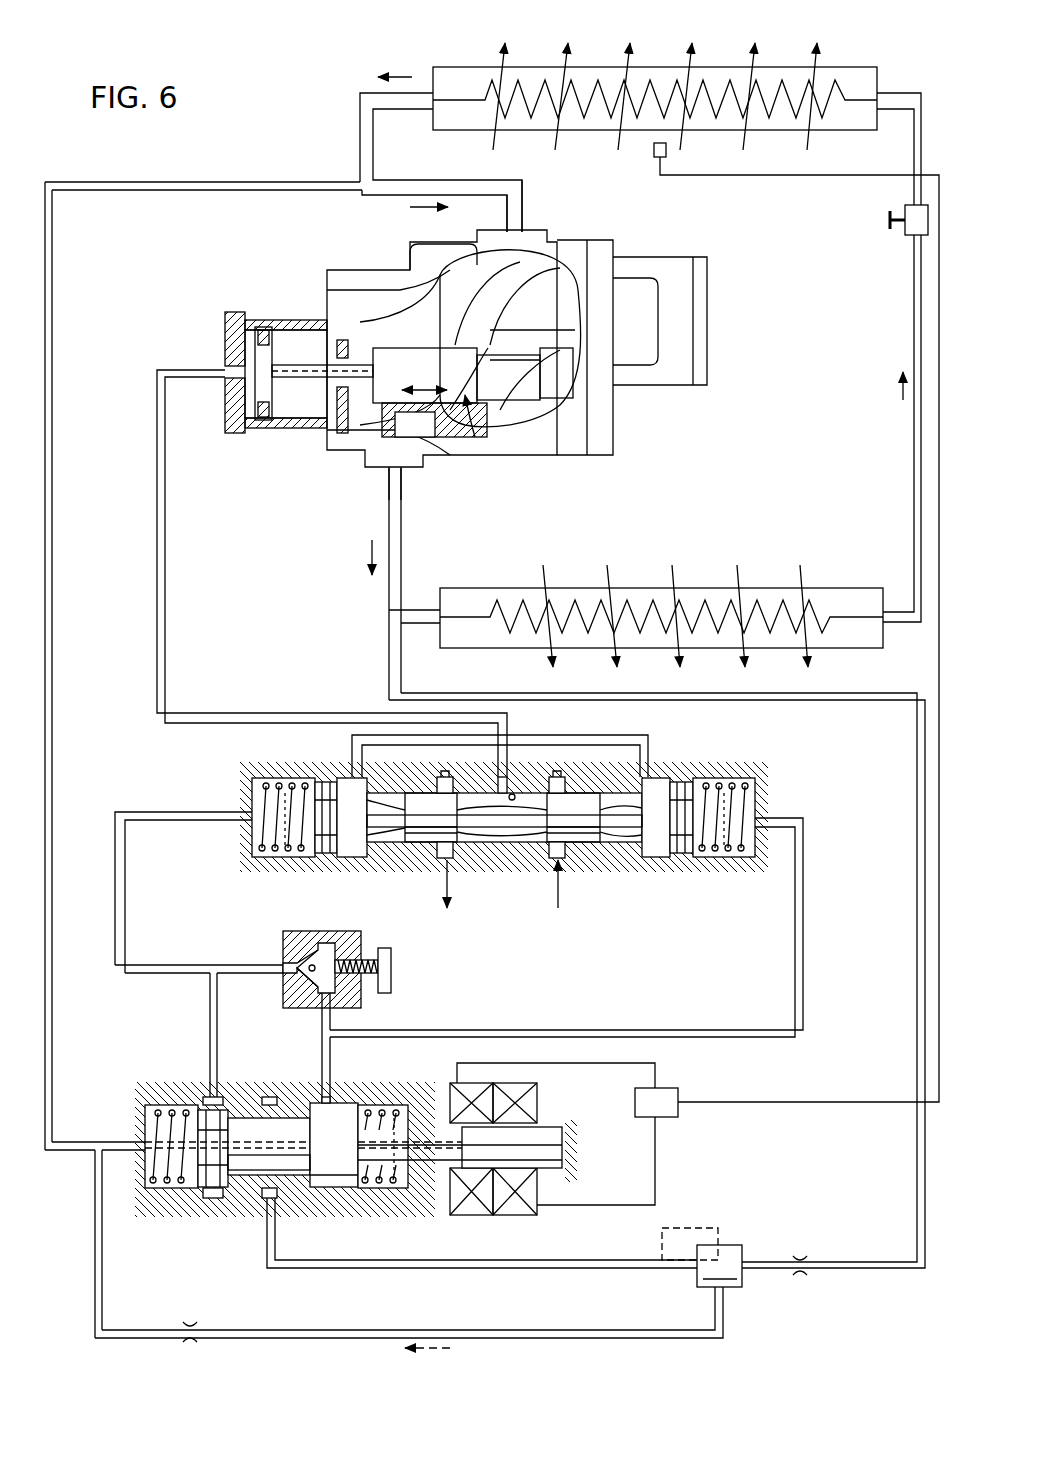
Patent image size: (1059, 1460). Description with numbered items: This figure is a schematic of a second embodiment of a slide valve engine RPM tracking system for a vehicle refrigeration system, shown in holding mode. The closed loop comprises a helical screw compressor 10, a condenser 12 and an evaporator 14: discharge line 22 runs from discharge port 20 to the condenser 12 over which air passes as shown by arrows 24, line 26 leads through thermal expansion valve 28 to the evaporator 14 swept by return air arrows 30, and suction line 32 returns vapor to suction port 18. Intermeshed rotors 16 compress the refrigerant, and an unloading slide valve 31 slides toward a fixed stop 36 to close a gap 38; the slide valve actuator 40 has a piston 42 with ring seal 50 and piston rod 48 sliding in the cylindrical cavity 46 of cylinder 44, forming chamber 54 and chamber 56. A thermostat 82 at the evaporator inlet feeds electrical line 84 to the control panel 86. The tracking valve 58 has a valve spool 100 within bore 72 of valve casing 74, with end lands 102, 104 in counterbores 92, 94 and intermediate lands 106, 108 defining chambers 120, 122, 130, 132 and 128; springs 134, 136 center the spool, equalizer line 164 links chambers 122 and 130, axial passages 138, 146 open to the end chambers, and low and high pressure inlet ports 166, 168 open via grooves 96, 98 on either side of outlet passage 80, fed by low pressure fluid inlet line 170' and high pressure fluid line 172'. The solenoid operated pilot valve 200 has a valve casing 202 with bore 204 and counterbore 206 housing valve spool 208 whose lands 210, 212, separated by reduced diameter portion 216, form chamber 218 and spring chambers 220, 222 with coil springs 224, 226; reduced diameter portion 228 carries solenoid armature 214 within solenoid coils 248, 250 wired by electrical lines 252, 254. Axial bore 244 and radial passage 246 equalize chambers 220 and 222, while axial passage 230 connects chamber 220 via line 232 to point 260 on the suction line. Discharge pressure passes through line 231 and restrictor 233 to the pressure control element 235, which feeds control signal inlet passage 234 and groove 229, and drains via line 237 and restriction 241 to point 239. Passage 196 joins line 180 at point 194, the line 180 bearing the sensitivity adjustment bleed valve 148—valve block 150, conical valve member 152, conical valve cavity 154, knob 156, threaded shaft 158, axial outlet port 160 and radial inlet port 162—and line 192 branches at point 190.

The helical screw rotary compressor 10 is at (660, 243).
The condenser 12 is at (818, 578).
The evaporator 14 is at (840, 55).
The helical screw rotors 16 is at (557, 326).
The suction port 18 is at (522, 240).
The discharge port 20 is at (402, 475).
The discharge line 22 is at (402, 545).
The arrows 24 is at (652, 568).
The line 26 is at (910, 570).
The thermal expansion valve 28 is at (915, 210).
The arrows 30 is at (630, 52).
The unloading slide valve 31 is at (480, 445).
The suction line 32 is at (375, 160).
The fixed stop 36 is at (580, 380).
The gap 38 is at (530, 365).
The slide valve actuator 40 is at (285, 364).
The piston 42 is at (232, 345).
The cylinder 44 is at (295, 428).
The cylindrical cavity 46 is at (320, 425).
The piston rod 48 is at (312, 365).
The ring seal 50 is at (263, 327).
The chamber 54 is at (258, 420).
The chamber 56 is at (340, 340).
The tracking valve 58 is at (466, 885).
The cylindrical bore 72 is at (481, 820).
The valve casing 74 is at (735, 773).
The outlet passage 80 is at (162, 605).
The thermostat 82 is at (654, 155).
The electrical line 84 is at (795, 175).
The control panel 86 is at (672, 1088).
The counterbore 92 is at (305, 780).
The counterbore 94 is at (710, 773).
The annular groove 96 is at (446, 777).
The annular groove 98 is at (565, 767).
The valve spool 100 is at (500, 790).
The end land 102 is at (335, 778).
The end land 104 is at (640, 778).
The intermediate land 106 is at (420, 842).
The intermediate land 108 is at (582, 793).
The chamber 120 is at (272, 780).
The chamber 122 is at (360, 855).
The chamber 128 is at (752, 858).
The chamber 130 is at (658, 857).
The annular chamber 132 is at (504, 828).
The helical coil spring 134 is at (258, 848).
The helical coil spring 136 is at (705, 857).
The axial passage 138 is at (237, 812).
The axial passage 146 is at (770, 820).
The sensitivity adjustment bleed valve 148 is at (337, 965).
The valve block 150 is at (287, 931).
The conical valve member 152 is at (312, 978).
The conical valve cavity 154 is at (298, 950).
The knob 156 is at (392, 950).
The threaded shaft 158 is at (360, 962).
The axial outlet port 160 is at (300, 968).
The radial inlet port 162 is at (332, 1015).
The equalizer line 164 is at (430, 745).
The low pressure fluid inlet port 166 is at (445, 858).
The high pressure fluid inlet port 168 is at (558, 858).
The low pressure fluid inlet line 170' is at (476, 884).
The high pressure fluid line 172' is at (586, 884).
The line 180 is at (120, 900).
The point 190 is at (205, 973).
The line 192 is at (210, 1050).
The point 194 is at (322, 1043).
The passage 196 is at (332, 1072).
The solenoid operated pilot valve 200 is at (403, 1153).
The valve casing 202 is at (418, 1190).
The bore 204 is at (408, 1118).
The counterbore 206 is at (386, 1190).
The valve spool 208 is at (268, 1095).
The land 210 is at (198, 1175).
The land 212 is at (335, 1187).
The solenoid armature 214 is at (536, 1168).
The reduced diameter portion 216 is at (275, 1200).
The chamber 218 is at (255, 1110).
The chamber 220 is at (160, 1110).
The chamber 222 is at (388, 1110).
The coil spring 224 is at (200, 1110).
The coil spring 226 is at (490, 1136).
The reduced diameter portion 228 is at (445, 1110).
The circumferential groove 229 is at (322, 1190).
The axial passage 230 is at (132, 1140).
The line 231 is at (389, 660).
The line 232 is at (52, 465).
The restrictor 233 is at (805, 1255).
The control signal inlet passage 234 is at (268, 1198).
The pressure control element 235 is at (735, 1245).
The line 237 is at (608, 1330).
The point 239 is at (95, 1160).
The restriction 241 is at (197, 1325).
The axial bore 244 is at (312, 1138).
The radial passage 246 is at (396, 1188).
The solenoid coil 248 is at (485, 1215).
The solenoid coil 250 is at (518, 1215).
The electrical lines 252 is at (618, 1063).
The lines 254 is at (656, 1192).
The point 260 is at (355, 182).